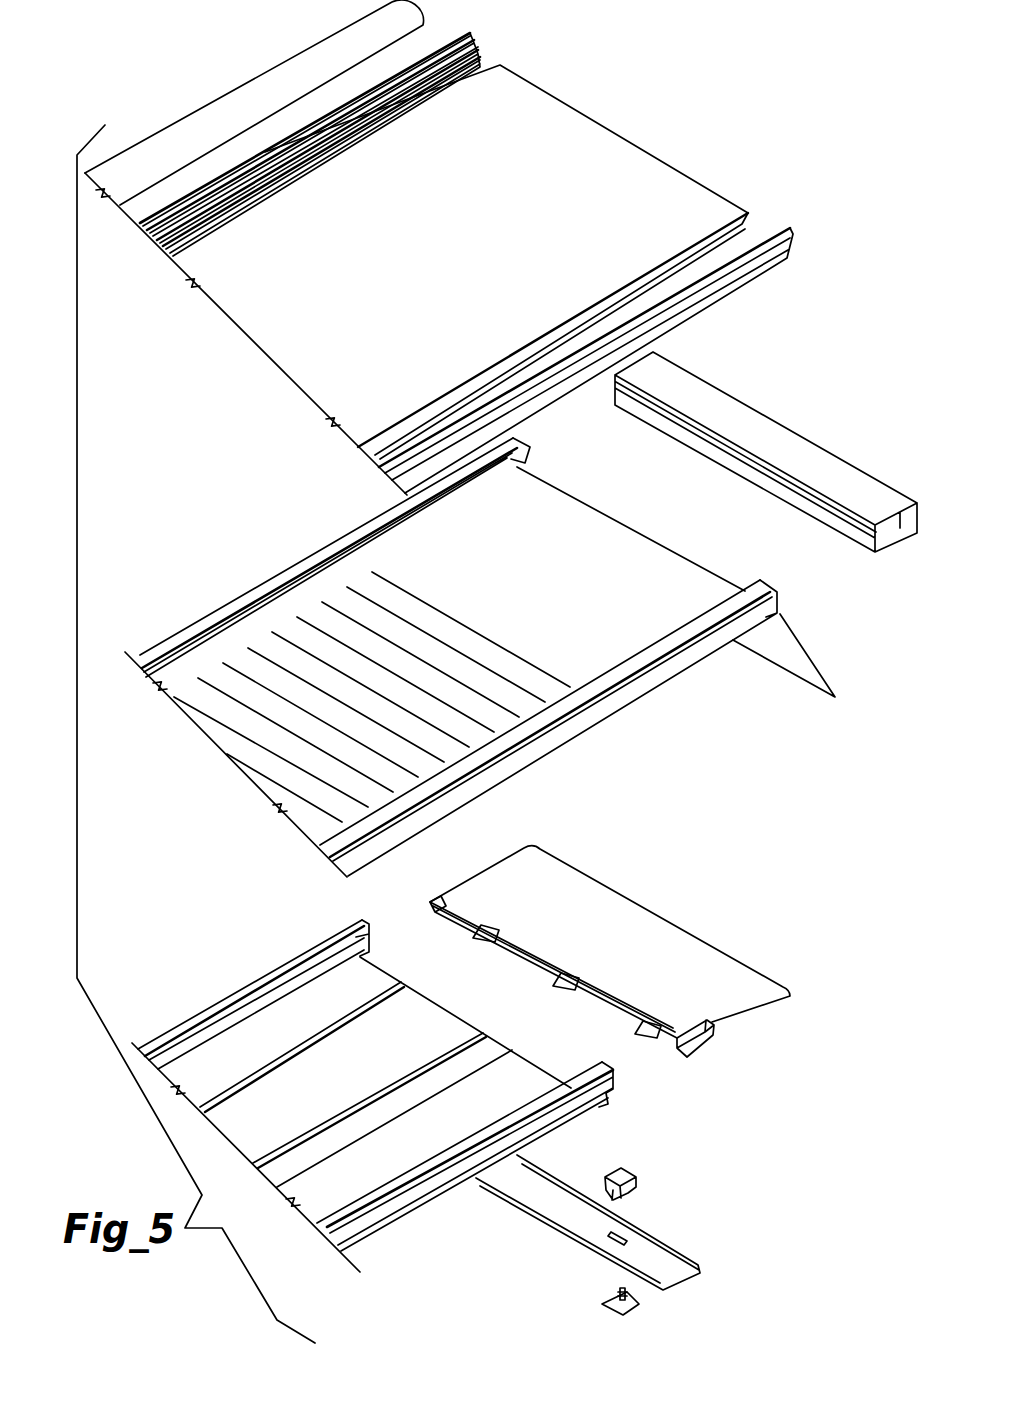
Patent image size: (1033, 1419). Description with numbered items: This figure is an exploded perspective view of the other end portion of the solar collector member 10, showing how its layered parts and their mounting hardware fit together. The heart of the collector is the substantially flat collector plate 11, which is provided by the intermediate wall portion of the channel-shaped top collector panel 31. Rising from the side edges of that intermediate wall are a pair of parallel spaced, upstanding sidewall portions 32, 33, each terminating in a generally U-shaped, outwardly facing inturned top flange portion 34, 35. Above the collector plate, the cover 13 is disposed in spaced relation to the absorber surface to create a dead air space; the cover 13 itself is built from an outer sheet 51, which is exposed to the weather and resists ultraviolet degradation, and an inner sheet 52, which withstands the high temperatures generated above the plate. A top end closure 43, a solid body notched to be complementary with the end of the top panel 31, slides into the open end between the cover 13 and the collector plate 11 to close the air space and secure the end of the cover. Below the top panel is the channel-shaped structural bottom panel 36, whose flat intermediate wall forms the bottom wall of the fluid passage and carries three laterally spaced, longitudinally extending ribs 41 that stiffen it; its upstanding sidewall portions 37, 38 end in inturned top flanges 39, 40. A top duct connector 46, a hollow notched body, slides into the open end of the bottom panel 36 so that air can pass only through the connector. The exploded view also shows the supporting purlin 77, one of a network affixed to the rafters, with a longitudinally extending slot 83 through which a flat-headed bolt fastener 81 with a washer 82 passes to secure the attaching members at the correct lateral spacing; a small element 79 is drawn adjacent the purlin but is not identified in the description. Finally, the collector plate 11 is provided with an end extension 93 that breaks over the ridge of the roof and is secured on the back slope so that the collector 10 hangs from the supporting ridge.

The solar collector member 10 is at (206, 555).
The collector plate 11 is at (265, 787).
The cover 13 is at (641, 141).
The top collector panel 31 is at (663, 541).
The sidewall portion 32 is at (515, 463).
The sidewall portion 33 is at (772, 608).
The inturned top flange portion 34 is at (516, 447).
The inturned top flange portion 35 is at (770, 585).
The bottom panel 36 is at (271, 1184).
The sidewall portion 37 is at (355, 937).
The sidewall portion 38 is at (612, 1083).
The inturned top flange 39 is at (282, 967).
The inturned top flange 40 is at (587, 1073).
The ribs 41 is at (483, 1032).
The top end closure 43 is at (768, 422).
The top duct connector 46 is at (673, 933).
The outer sheet 51 is at (710, 195).
The inner sheet 52 is at (748, 224).
The purlin 77 is at (535, 1187).
The clip block 79 is at (630, 1172).
The bolt fastener 81 is at (618, 1291).
The washer 82 is at (607, 1308).
The slot 83 is at (630, 1234).
The end extension 93 is at (805, 665).